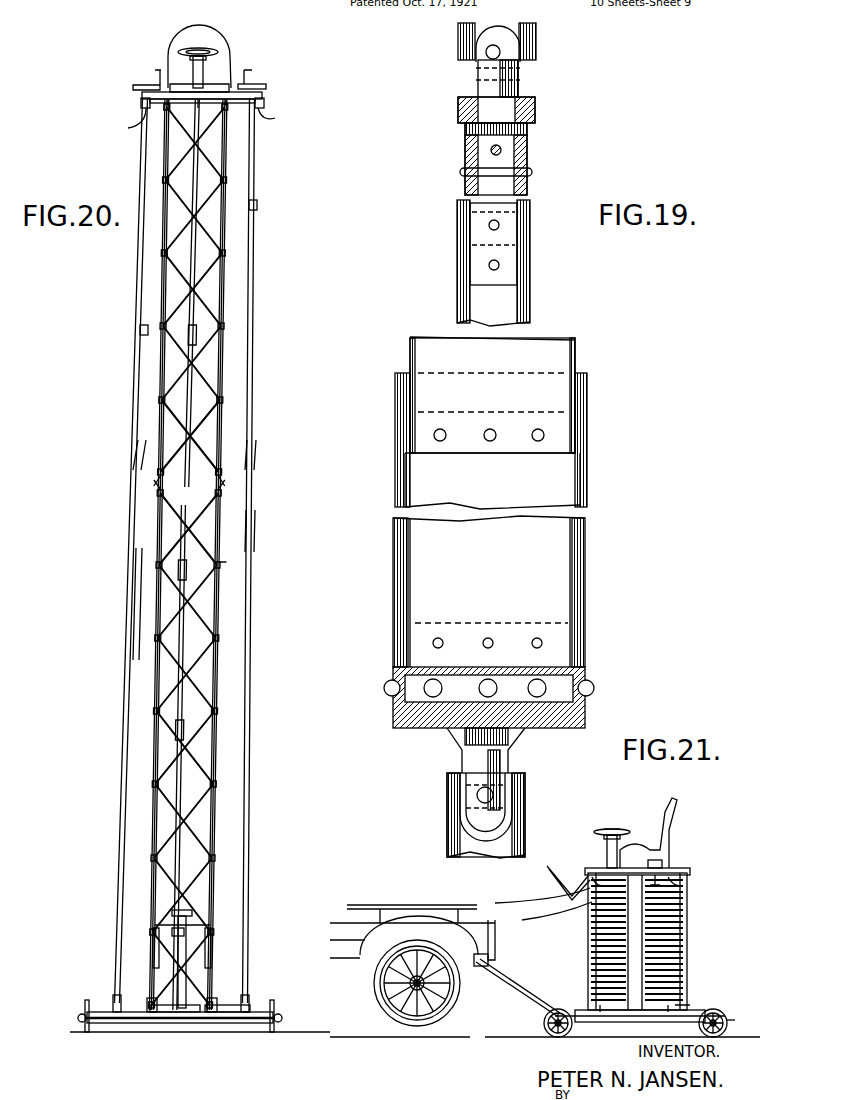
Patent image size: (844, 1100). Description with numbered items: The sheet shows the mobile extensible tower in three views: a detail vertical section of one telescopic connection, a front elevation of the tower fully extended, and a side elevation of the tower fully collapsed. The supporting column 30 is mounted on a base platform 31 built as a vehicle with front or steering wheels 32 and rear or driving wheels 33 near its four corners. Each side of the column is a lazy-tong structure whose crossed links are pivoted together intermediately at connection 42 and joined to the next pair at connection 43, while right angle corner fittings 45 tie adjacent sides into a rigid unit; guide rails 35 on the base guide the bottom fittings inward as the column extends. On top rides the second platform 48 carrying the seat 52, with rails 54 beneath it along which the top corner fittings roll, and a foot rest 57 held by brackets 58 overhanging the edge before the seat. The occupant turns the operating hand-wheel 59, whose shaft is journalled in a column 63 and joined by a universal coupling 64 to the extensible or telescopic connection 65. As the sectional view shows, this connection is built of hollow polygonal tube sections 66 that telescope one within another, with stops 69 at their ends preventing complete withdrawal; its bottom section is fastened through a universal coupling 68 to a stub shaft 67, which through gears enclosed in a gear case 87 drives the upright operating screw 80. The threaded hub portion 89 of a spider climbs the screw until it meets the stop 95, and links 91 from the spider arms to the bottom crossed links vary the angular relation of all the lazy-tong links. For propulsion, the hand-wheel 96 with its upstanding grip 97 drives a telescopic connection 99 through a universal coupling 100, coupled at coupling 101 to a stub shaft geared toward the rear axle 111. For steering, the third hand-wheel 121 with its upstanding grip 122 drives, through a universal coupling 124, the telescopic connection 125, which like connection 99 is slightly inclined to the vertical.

In FIG. 20, the supporting column 30 is at (218, 740).
In FIG. 21, the supporting column 30 is at (620, 944).
In FIG. 20, the supporting base or base platform 31 is at (232, 1010).
In FIG. 21, the supporting base or base platform 31 is at (668, 1005).
In FIG. 20, the front or steering wheels 32 is at (112, 1000).
In FIG. 21, the front or steering wheels 32 is at (548, 1033).
In FIG. 21, the rear or driving wheels 33 is at (713, 1010).
In FIG. 20, the guide rails 35 is at (160, 1020).
In FIG. 21, the guide rails 35 is at (596, 1005).
In FIG. 20, the intermediate pivotal connection of links 42 is at (185, 910).
In FIG. 20, the end pivotal connection of links 43 is at (234, 566).
In FIG. 20, the right angle corner fittings 45 is at (228, 330).
In FIG. 21, the right angle corner fittings 45 is at (550, 916).
In FIG. 20, the second platform 48 is at (275, 118).
In FIG. 21, the second platform 48 is at (660, 876).
In FIG. 20, the seat 52 is at (228, 30).
In FIG. 21, the seat 52 is at (677, 800).
In FIG. 20, the rails 54 is at (128, 128).
In FIG. 21, the rails 54 is at (688, 898).
In FIG. 21, the foot rest 57 is at (546, 868).
In FIG. 21, the brackets 58 is at (540, 900).
In FIG. 20, the operating hand-wheel 59 is at (185, 48).
In FIG. 21, the operating hand-wheel 59 is at (612, 822).
In FIG. 20, the column 63 is at (205, 66).
In FIG. 21, the column 63 is at (606, 850).
In FIG. 20, the universal coupling 64 is at (205, 108).
In FIG. 19, the universal coupling 64 is at (500, 52).
In FIG. 21, the universal coupling 64 is at (672, 882).
In FIG. 20, the extensible or telescopic connection 65 is at (207, 312).
In FIG. 19, the extensible or telescopic connection 65 is at (600, 475).
In FIG. 20, the hollow polygonal tube sections 66 is at (140, 401).
In FIG. 19, the hollow polygonal tube sections 66 is at (532, 298).
In FIG. 19, the stub shaft 67 is at (512, 830).
In FIG. 20, the universal coupling 68 is at (190, 1022).
In FIG. 19, the universal coupling 68 is at (490, 794).
In FIG. 19, the stops 69 is at (530, 252).
In FIG. 20, the upright operating screw 80 is at (190, 990).
In FIG. 20, the gear case 87 is at (200, 1020).
In FIG. 20, the hub portion 89 is at (172, 931).
In FIG. 20, the links 91 is at (153, 950).
In FIG. 20, the stop 95 is at (195, 913).
In FIG. 20, the operating hand-wheel 96 is at (250, 84).
In FIG. 21, the operating hand-wheel 96 is at (662, 868).
In FIG. 20, the upstanding grip 97 is at (246, 72).
In FIG. 20, the extensible or telescopic connection 99 is at (256, 645).
In FIG. 21, the extensible or telescopic connection 99 is at (651, 929).
In FIG. 20, the universal coupling 100 is at (265, 103).
In FIG. 21, the coupling 101 is at (412, 965).
In FIG. 21, the rear axle 111 is at (560, 972).
In FIG. 20, the third hand-wheel 121 is at (140, 85).
In FIG. 20, the upstanding grip 122 is at (158, 72).
In FIG. 20, the universal coupling 124 is at (141, 103).
In FIG. 20, the extensible or telescopic connection 125 is at (123, 613).